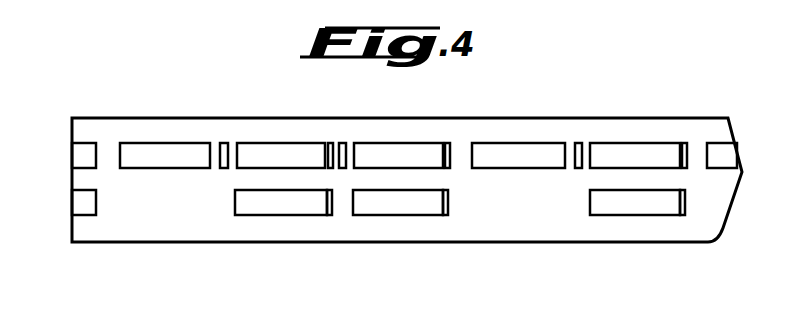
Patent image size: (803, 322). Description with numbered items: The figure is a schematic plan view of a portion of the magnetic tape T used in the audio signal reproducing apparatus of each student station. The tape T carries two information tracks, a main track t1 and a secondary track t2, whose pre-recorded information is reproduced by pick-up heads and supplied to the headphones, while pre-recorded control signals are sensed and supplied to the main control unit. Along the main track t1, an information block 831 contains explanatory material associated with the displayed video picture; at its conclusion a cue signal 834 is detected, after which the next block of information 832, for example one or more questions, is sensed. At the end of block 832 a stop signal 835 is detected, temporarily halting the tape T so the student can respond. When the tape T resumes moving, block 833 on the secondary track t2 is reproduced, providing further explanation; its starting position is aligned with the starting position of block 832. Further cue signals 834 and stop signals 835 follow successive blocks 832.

The magnetic tape T is at (155, 243).
The main track t1 is at (62, 151).
The secondary track t2 is at (62, 198).
The information block 831 is at (545, 148).
The block of information 832 is at (655, 150).
The block of information 833 is at (630, 215).
The cue signal 834 is at (580, 143).
The stop signal 835 is at (682, 218).